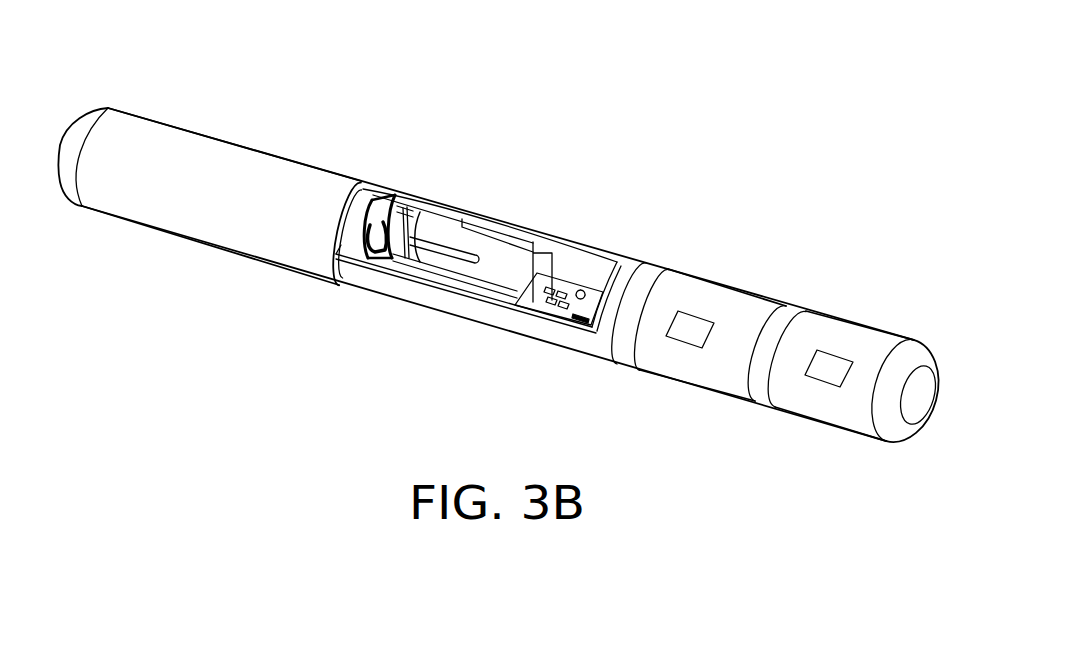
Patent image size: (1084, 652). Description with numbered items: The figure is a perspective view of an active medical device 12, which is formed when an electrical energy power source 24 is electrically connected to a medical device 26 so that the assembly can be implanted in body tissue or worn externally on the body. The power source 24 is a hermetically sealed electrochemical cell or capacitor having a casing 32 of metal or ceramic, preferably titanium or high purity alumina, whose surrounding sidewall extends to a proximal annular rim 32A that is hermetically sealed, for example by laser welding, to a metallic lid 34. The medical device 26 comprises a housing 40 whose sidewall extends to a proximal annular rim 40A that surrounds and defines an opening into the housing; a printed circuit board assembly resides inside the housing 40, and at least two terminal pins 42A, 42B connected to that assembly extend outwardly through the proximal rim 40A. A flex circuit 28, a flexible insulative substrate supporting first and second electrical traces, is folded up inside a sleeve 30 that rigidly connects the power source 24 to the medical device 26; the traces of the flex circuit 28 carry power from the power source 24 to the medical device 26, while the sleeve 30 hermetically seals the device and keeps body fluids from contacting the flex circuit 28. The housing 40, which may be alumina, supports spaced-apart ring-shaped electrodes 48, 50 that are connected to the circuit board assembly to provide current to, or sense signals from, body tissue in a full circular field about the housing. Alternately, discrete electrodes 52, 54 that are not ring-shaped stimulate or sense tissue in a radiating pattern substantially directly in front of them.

The active medical device 12 is at (614, 106).
The electrical energy power source 24 is at (199, 106).
The medical device 26 is at (745, 233).
The flex circuit 28 is at (398, 208).
The sleeve 30 is at (403, 288).
The casing 32 is at (190, 212).
The proximal annular rim 32A is at (360, 183).
The metallic lid 34 is at (340, 246).
The housing 40 is at (733, 380).
The proximal annular rim 40A is at (443, 290).
The terminal pin 42A is at (383, 262).
The terminal pin 42B is at (462, 217).
The ring-shaped electrode 48 is at (786, 308).
The ring-shaped electrode 50 is at (650, 272).
The discrete electrode 52 is at (820, 378).
The discrete electrode 54 is at (684, 342).